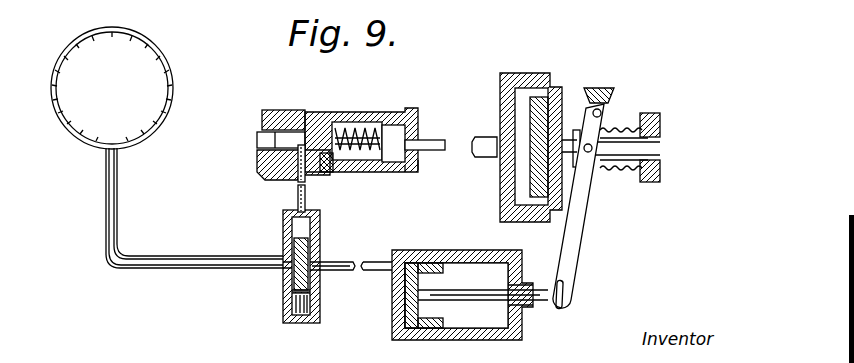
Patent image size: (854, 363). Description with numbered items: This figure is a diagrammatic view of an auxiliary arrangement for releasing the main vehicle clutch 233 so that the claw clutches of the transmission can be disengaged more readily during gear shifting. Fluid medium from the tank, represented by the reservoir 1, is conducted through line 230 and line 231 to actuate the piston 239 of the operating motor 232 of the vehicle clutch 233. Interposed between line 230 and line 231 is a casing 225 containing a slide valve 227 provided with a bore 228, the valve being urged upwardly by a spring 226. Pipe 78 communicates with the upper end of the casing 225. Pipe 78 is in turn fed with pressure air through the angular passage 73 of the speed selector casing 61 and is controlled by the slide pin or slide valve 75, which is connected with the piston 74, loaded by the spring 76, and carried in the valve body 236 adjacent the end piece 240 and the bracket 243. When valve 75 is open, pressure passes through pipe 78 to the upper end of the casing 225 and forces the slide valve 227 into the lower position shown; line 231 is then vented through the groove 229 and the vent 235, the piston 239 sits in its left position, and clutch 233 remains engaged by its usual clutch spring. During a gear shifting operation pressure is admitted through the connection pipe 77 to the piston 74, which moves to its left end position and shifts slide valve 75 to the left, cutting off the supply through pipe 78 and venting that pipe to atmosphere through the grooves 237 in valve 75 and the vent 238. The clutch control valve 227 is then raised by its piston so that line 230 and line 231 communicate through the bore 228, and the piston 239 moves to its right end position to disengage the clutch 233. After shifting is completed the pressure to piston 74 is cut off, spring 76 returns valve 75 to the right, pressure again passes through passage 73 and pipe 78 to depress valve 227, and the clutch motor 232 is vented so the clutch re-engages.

The float 1 is at (72, 136).
The line 230 is at (161, 266).
The casing 225 is at (283, 217).
The spring 226 is at (283, 303).
The slide valve 227 is at (283, 272).
The bore 228 is at (283, 283).
The vent 235 is at (318, 248).
The groove 229 is at (318, 259).
The line 231 is at (372, 271).
The piston 239 is at (400, 342).
The operating motor 232 is at (485, 335).
The vehicle clutch 233 is at (557, 90).
The angular passage 73 is at (305, 112).
The slide pin 75 is at (257, 139).
The bracket 243 is at (297, 151).
The valve body 236 is at (322, 112).
The spring 76 is at (352, 125).
The piston 74 is at (383, 125).
The connection pipe 77 is at (430, 142).
The casing 61 is at (418, 164).
The body end 240 is at (405, 173).
The vent 238 is at (335, 168).
The pipe 78 is at (297, 195).
The grooves 237 is at (318, 176).